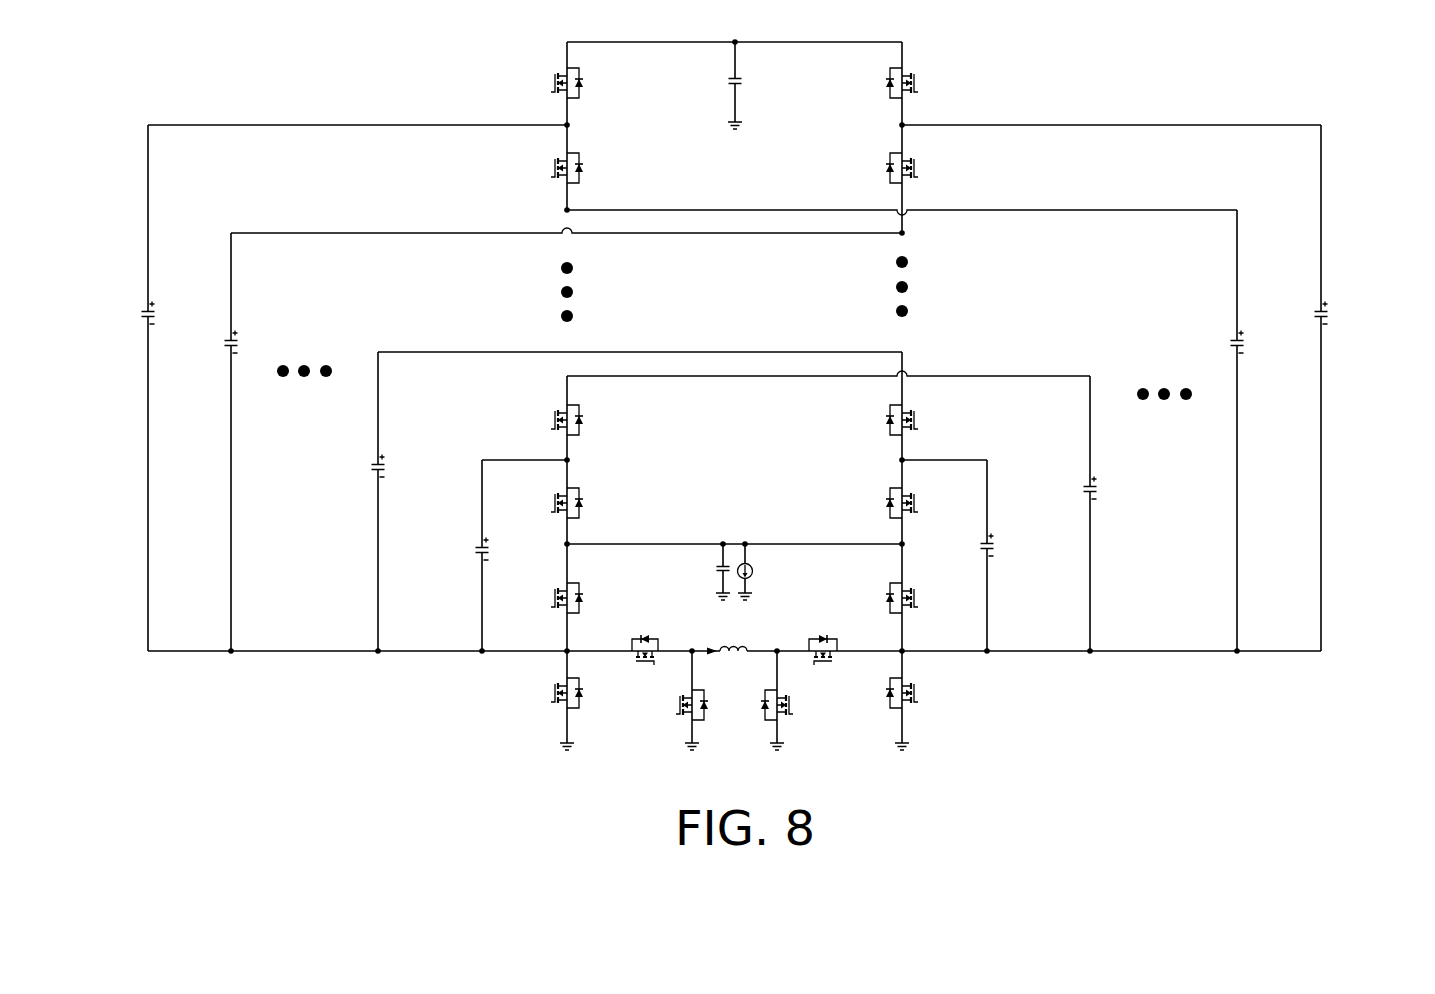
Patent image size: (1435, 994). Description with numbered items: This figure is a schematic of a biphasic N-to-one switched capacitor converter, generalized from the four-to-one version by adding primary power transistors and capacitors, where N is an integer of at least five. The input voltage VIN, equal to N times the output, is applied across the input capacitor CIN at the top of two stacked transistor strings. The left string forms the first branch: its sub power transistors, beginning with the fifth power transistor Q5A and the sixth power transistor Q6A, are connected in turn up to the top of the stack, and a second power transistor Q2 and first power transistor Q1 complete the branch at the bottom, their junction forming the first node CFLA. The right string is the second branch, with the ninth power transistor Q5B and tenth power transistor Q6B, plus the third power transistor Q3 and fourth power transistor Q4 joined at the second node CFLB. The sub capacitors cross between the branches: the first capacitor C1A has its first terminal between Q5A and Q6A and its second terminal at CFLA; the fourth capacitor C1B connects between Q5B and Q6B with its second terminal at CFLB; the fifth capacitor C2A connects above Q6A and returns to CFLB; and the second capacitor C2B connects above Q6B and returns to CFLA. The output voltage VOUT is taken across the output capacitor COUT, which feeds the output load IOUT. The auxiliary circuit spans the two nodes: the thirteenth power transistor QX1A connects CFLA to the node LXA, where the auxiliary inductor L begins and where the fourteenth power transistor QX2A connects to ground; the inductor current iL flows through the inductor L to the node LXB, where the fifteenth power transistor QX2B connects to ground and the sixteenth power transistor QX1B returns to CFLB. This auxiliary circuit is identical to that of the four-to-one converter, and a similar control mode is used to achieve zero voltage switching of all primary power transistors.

The input voltage VIN is at (734, 34).
The input capacitor CIN is at (749, 85).
The fifth capacitor C2A is at (864, 511).
The second capacitor C2B is at (603, 501).
The first capacitor C1A is at (482, 555).
The fourth capacitor C1B is at (987, 555).
The sixth power transistor Q6A is at (552, 420).
The fifth power transistor Q5A is at (552, 503).
The second power transistor Q2 is at (556, 598).
The first power transistor Q1 is at (556, 693).
The tenth power transistor Q6B is at (916, 420).
The ninth power transistor Q5B is at (916, 503).
The third power transistor Q3 is at (912, 598).
The fourth power transistor Q4 is at (912, 693).
The output voltage VOUT is at (734, 534).
The output capacitor COUT is at (701, 570).
The output load IOUT is at (765, 570).
The first node CFLA is at (583, 643).
The second node CFLB is at (885, 643).
The inductor first-terminal node LXA is at (690, 643).
The inductor second-terminal node LXB is at (775, 643).
The auxiliary inductor L is at (733, 640).
The inductor current iL is at (713, 660).
The thirteenth power transistor QX1A is at (635, 659).
The sixteenth power transistor QX1B is at (832, 659).
The fourteenth power transistor QX2A is at (672, 700).
The fifteenth power transistor QX2B is at (796, 700).